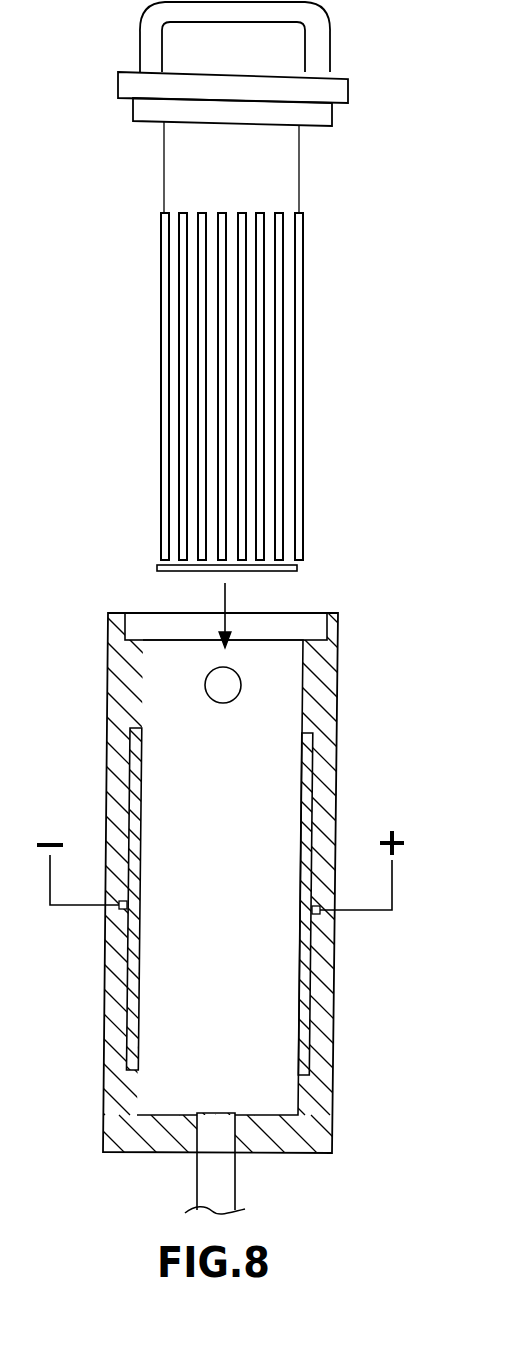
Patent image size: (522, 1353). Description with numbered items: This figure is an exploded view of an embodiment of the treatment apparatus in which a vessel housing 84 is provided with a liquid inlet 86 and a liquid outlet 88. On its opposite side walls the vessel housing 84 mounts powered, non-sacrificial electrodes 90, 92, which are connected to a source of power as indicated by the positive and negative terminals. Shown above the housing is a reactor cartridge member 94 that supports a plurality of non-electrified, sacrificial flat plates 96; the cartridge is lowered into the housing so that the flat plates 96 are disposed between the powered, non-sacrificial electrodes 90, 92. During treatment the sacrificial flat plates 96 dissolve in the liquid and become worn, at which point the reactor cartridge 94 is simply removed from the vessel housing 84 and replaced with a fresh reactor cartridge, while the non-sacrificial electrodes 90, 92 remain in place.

The vessel housing 84 is at (334, 1020).
The liquid inlet 86 is at (236, 1183).
The liquid outlet 88 is at (222, 702).
The non-sacrificial electrode 90 is at (142, 828).
The non-sacrificial electrode 92 is at (298, 965).
The reactor cartridge member 94 is at (223, 286).
The sacrificial flat plates 96 is at (157, 362).